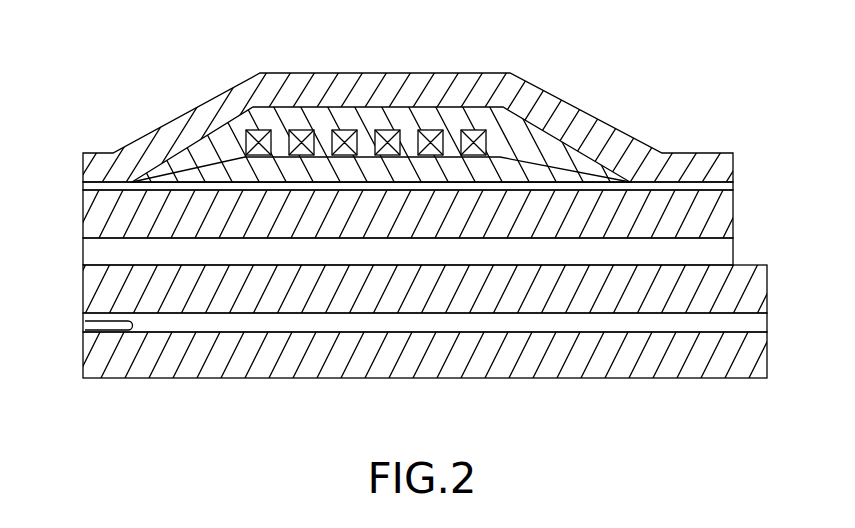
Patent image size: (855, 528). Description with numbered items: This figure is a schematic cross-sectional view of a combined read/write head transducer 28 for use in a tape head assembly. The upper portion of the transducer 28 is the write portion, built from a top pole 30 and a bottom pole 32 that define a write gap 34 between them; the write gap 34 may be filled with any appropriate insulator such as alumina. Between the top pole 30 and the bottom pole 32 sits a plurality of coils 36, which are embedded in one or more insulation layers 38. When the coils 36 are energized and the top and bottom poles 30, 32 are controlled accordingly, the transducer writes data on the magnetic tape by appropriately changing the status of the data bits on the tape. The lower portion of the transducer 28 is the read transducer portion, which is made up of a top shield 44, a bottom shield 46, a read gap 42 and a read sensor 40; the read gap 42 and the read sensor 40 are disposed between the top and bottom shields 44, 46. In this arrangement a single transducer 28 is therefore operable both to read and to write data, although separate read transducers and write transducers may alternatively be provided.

The transducer 28 is at (128, 104).
The top pole 30 is at (205, 118).
The bottom pole 32 is at (727, 212).
The write gap 34 is at (80, 181).
The coils 36 is at (343, 130).
The insulation layers 38 is at (528, 172).
The read sensor 40 is at (140, 330).
The read gap 42 is at (80, 316).
The top shield 44 is at (93, 293).
The bottom shield 46 is at (257, 372).